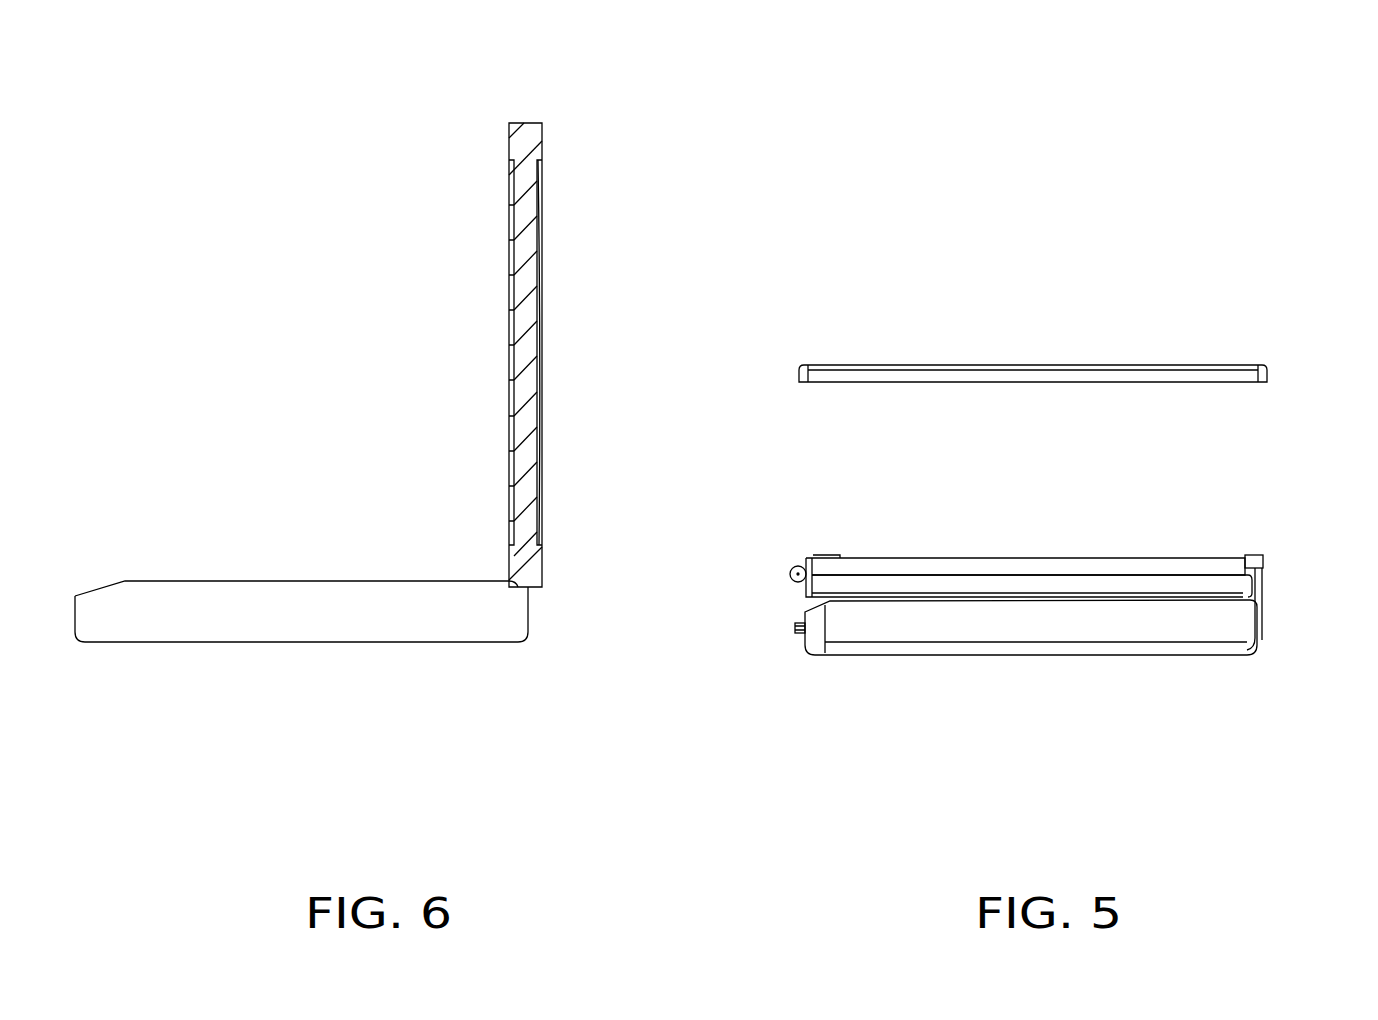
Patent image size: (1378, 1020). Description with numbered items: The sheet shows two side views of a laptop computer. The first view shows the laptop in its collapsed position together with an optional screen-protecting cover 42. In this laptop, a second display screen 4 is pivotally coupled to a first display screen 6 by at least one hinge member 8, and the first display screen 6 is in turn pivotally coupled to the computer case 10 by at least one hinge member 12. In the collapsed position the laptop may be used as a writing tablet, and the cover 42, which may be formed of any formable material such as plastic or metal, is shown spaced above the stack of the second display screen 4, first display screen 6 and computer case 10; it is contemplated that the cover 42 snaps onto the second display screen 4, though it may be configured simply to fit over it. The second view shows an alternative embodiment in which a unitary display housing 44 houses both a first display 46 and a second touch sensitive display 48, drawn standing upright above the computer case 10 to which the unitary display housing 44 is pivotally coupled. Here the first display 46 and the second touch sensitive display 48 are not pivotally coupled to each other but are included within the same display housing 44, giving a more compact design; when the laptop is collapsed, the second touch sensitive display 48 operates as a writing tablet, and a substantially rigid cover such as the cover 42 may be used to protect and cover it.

In FIG. 5, the second display screen 4 is at (1135, 566).
In FIG. 5, the first display screen 6 is at (845, 583).
In FIG. 5, the hinge member 8 is at (795, 567).
In FIG. 6, the computer case 10 is at (357, 610).
In FIG. 5, the computer case 10 is at (1117, 621).
In FIG. 5, the hinge member 12 is at (1253, 587).
In FIG. 6, the screen-protecting cover 42 is at (311, 282).
In FIG. 5, the screen-protecting cover 42 is at (1003, 365).
In FIG. 6, the unitary display housing 44 is at (524, 141).
In FIG. 6, the first display 46 is at (513, 427).
In FIG. 6, the second touch sensitive display 48 is at (540, 210).